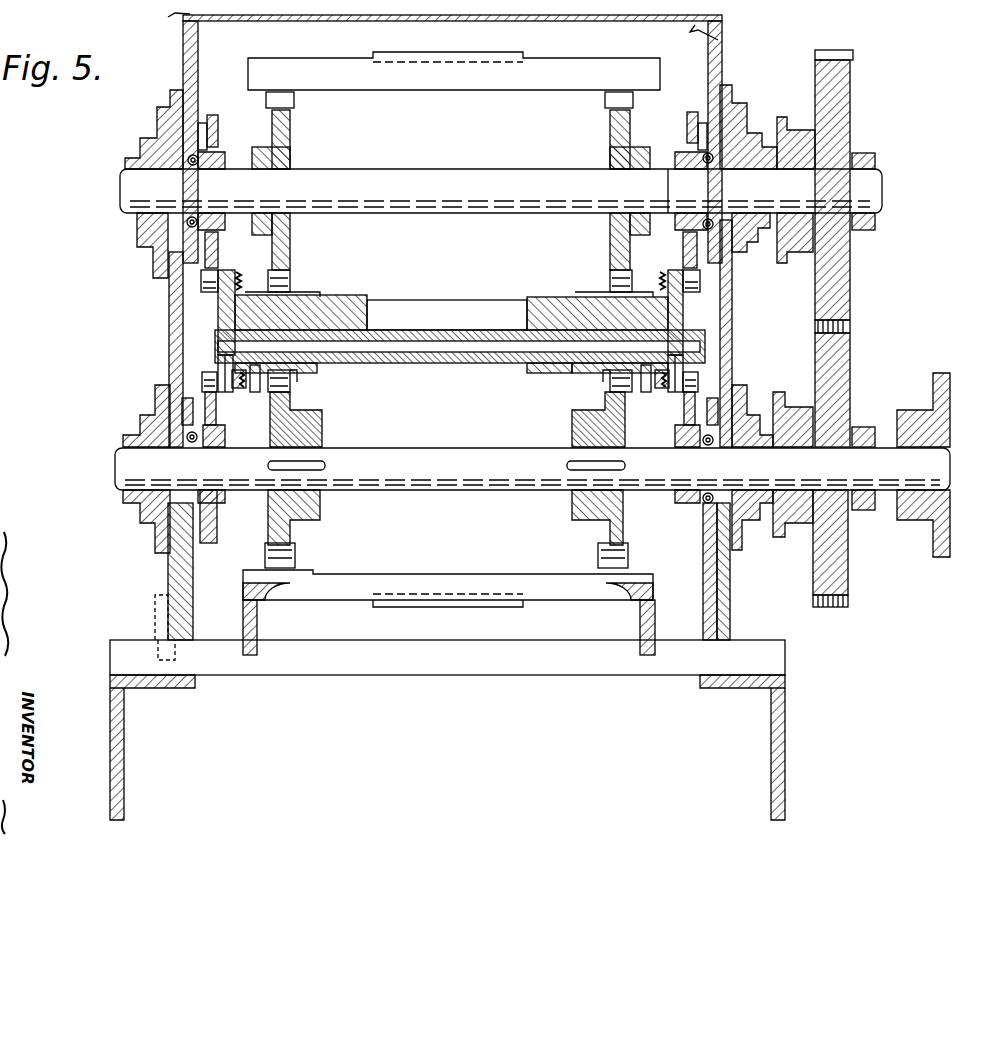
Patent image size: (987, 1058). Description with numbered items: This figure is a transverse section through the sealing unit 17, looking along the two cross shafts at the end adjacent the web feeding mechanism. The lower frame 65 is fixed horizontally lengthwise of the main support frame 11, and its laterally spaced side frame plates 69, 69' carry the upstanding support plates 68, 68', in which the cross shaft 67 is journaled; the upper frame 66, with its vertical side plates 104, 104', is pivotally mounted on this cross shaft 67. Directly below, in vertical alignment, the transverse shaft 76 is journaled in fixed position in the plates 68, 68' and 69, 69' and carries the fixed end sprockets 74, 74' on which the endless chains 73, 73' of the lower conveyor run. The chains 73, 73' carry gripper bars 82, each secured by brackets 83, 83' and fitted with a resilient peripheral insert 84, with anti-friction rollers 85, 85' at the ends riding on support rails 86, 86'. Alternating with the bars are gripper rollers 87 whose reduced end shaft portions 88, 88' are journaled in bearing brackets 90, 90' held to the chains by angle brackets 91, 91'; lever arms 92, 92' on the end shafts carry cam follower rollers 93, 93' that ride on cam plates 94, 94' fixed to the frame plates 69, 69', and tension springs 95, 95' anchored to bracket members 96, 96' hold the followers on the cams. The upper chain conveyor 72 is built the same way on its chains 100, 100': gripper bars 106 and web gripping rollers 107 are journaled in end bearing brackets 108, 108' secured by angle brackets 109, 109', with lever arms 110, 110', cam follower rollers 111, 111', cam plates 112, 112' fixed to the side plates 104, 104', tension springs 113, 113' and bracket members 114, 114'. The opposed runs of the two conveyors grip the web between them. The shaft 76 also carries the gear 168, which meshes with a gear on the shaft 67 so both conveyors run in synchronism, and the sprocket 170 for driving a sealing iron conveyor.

The main support frame 11 is at (168, 688).
The sealing unit 17 is at (169, 12).
The lower frame 65 is at (200, 618).
The upper frame 66 is at (725, 20).
The cross shaft 67 is at (885, 190).
The upstanding support plate 68 is at (150, 349).
The upstanding support plate 68' is at (747, 333).
The side frame plate 69 is at (195, 571).
The side frame plate 69' is at (696, 571).
The upper chain conveyor 72 is at (699, 30).
The endless chain 73 is at (301, 519).
The endless chain 73' is at (579, 519).
The end sprocket 74 is at (311, 419).
The end sprocket 74' is at (580, 419).
The transverse shaft 76 is at (470, 490).
The gripper bar 82 is at (365, 576).
The bracket 83 is at (311, 555).
The bracket 83' is at (588, 555).
The peripheral insert 84 is at (450, 607).
The anti-friction roller 85 is at (247, 596).
The anti-friction roller 85' is at (650, 597).
The support rail 86 is at (266, 627).
The support rail 86' is at (625, 627).
The gripper roller 87 is at (460, 352).
The end shaft portion 88 is at (460, 359).
The end shaft portion 88' is at (540, 372).
The bearing bracket 90 is at (291, 374).
The bearing bracket 90' is at (606, 375).
The angle bracket 91 is at (301, 387).
The angle bracket 91' is at (596, 384).
The lever arm 92 is at (210, 360).
The lever arm 92' is at (692, 359).
The cam follower roller 93 is at (171, 370).
The cam follower roller 93' is at (727, 367).
The cam plate 94 is at (227, 418).
The cam plate 94' is at (667, 418).
The tension spring 95 is at (239, 394).
The tension spring 95' is at (668, 393).
The bracket member 96 is at (261, 397).
The bracket member 96' is at (638, 396).
The chain 100 is at (301, 130).
The chain 100' is at (600, 130).
The side plate 104 is at (213, 142).
The side plate 104' is at (742, 142).
The gripper bar 106 is at (562, 65).
The web gripping roller 107 is at (472, 305).
The end bearing bracket 108 is at (313, 298).
The end bearing bracket 108' is at (596, 298).
The angle bracket 109 is at (309, 275).
The angle bracket 109' is at (603, 275).
The lever arm 110 is at (210, 312).
The lever arm 110' is at (697, 312).
The cam follower roller 111 is at (168, 286).
The cam follower roller 111' is at (735, 281).
The cam plate 112 is at (229, 247).
The cam plate 112' is at (670, 249).
The tension spring 113 is at (238, 269).
The tension spring 113' is at (673, 271).
The bracket member 114 is at (289, 241).
The bracket member 114' is at (611, 241).
The gear 168 is at (781, 392).
The sprocket 170 is at (783, 117).